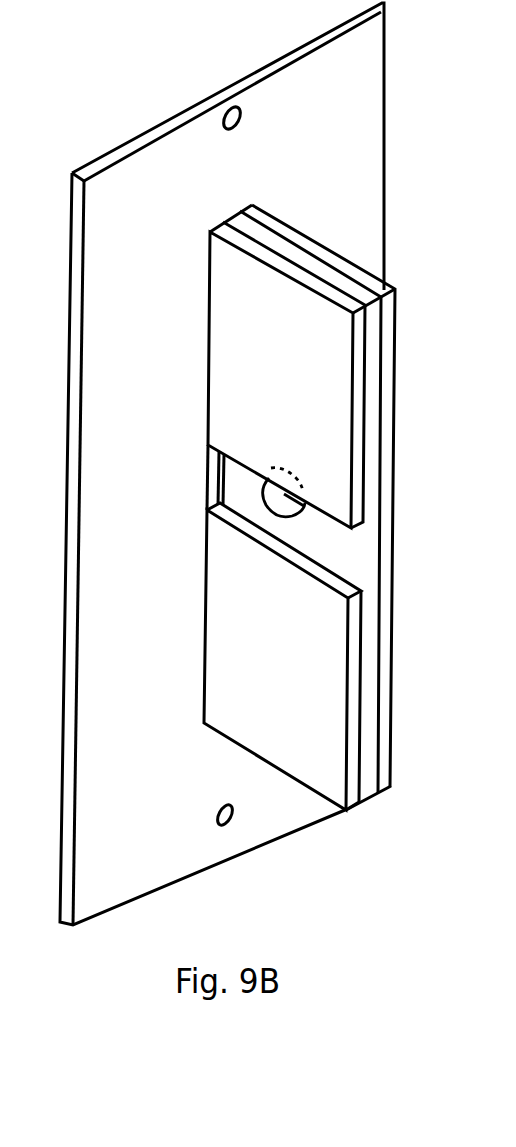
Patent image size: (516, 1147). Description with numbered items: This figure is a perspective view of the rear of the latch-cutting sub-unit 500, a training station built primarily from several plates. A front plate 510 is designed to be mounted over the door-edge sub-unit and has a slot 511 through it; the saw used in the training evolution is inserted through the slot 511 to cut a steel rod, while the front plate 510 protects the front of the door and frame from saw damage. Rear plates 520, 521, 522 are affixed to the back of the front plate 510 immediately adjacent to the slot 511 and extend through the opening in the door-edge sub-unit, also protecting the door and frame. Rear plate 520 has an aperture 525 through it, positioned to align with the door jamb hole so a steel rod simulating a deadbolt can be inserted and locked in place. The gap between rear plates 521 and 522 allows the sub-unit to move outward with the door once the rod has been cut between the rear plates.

The latch-cutting sub-unit 500 is at (148, 74).
The front plate 510 is at (70, 310).
The slot 511 is at (218, 476).
The rear plate 520 is at (397, 350).
The rear plate 521 is at (208, 262).
The rear plate 522 is at (203, 645).
The aperture 525 is at (293, 515).